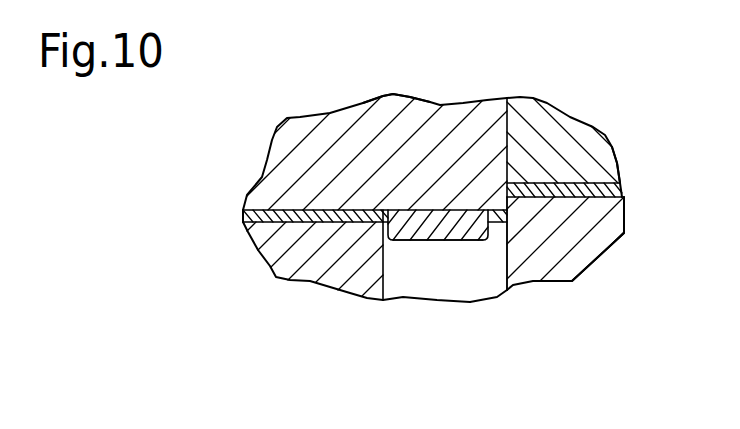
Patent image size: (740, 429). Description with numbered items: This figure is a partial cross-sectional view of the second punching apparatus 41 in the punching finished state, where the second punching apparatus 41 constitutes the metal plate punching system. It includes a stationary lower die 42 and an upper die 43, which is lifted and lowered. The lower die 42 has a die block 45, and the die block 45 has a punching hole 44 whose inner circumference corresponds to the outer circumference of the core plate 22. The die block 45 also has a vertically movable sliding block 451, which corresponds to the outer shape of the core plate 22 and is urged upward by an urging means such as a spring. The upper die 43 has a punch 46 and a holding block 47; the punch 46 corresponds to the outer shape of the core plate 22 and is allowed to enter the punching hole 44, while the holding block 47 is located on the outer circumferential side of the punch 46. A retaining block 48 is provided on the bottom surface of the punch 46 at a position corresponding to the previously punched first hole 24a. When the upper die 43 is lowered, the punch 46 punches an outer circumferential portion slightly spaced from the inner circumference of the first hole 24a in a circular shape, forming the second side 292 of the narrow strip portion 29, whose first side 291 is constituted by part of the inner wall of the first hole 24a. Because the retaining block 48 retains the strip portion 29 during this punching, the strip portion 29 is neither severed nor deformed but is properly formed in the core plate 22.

The second punching apparatus 41 is at (297, 112).
The punch 46 is at (394, 104).
The upper die 43 is at (596, 117).
The holding block 47 is at (619, 150).
The first hole 24a is at (393, 209).
The core plate 22 is at (267, 224).
The strip portion 29 is at (486, 226).
The first side 291 is at (484, 234).
The second side 292 is at (509, 216).
The die block 45 is at (625, 222).
The lower die 42 is at (614, 251).
The sliding block 451 is at (313, 282).
The retaining block 48 is at (398, 302).
The punching hole 44 is at (497, 300).